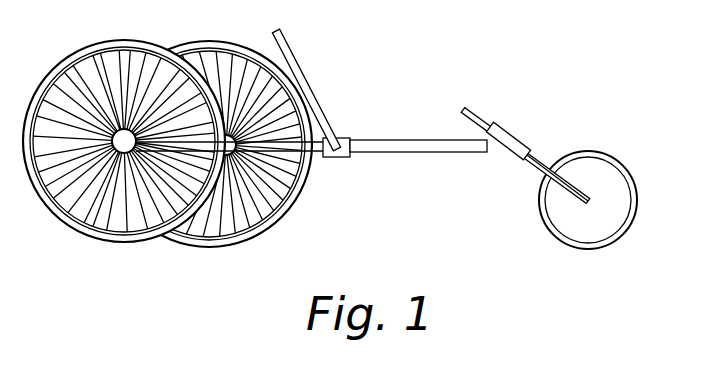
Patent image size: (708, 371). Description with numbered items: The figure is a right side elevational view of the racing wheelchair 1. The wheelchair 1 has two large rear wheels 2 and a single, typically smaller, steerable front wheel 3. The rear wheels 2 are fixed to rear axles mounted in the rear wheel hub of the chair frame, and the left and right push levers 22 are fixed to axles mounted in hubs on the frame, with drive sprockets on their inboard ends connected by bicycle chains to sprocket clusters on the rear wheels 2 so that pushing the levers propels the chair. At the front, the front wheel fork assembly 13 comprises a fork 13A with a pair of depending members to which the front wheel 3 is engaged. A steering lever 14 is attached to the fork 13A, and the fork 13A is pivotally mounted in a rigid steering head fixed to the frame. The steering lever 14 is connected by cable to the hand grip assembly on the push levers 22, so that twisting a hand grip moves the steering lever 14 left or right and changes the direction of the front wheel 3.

The wheelchair 1 is at (405, 153).
The rear wheels 2 is at (183, 242).
The front wheel 3 is at (541, 216).
The front wheel fork 13 is at (537, 160).
The fork 13A is at (520, 158).
The steering lever 14 is at (478, 117).
The push levers 22 is at (304, 72).